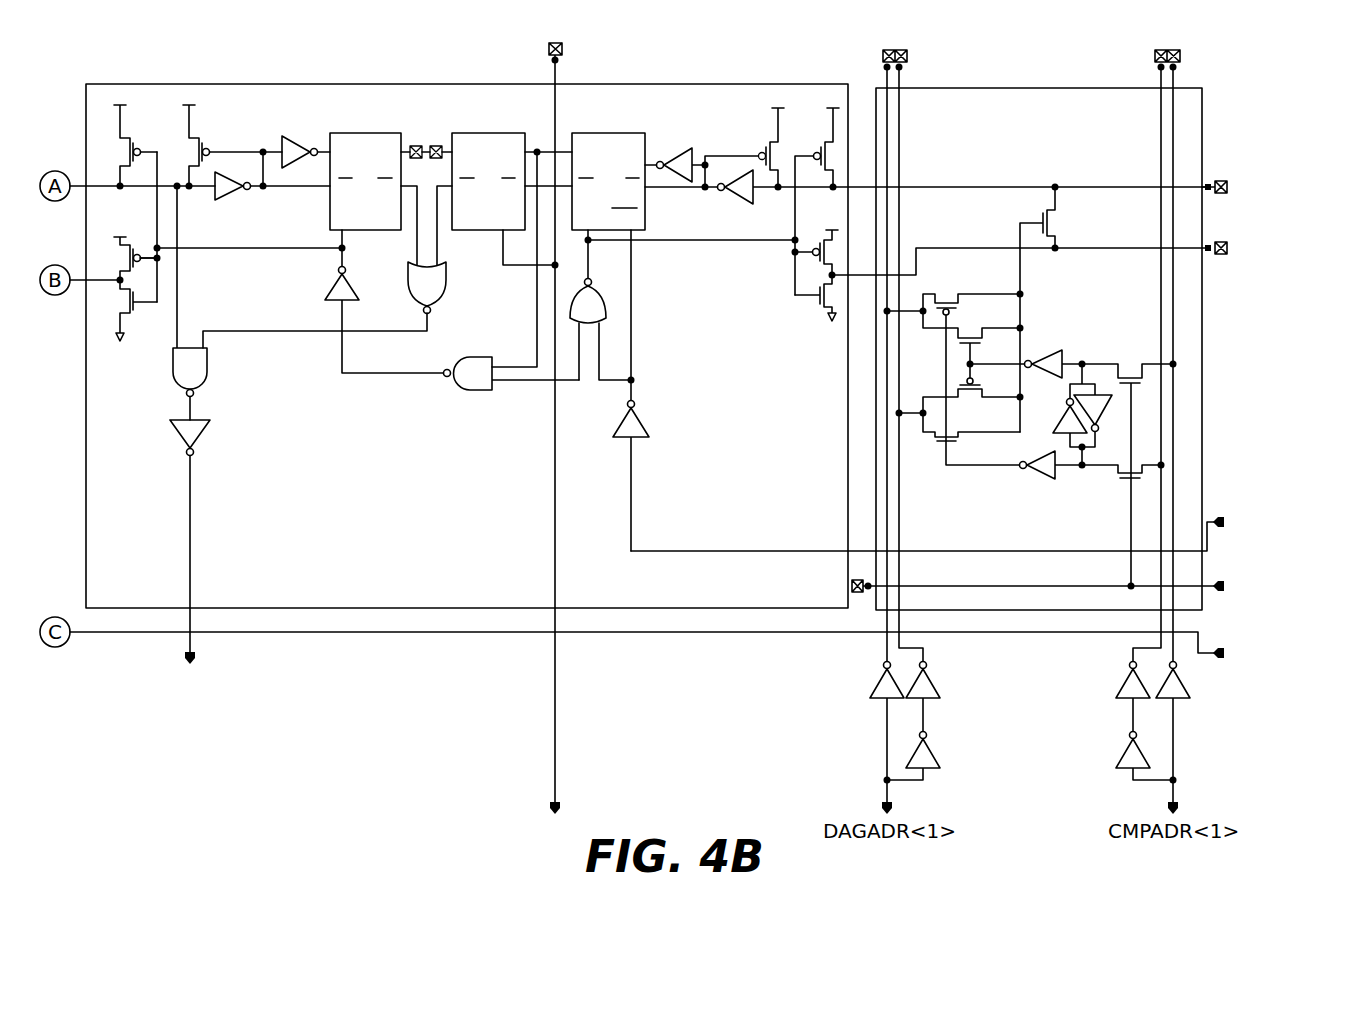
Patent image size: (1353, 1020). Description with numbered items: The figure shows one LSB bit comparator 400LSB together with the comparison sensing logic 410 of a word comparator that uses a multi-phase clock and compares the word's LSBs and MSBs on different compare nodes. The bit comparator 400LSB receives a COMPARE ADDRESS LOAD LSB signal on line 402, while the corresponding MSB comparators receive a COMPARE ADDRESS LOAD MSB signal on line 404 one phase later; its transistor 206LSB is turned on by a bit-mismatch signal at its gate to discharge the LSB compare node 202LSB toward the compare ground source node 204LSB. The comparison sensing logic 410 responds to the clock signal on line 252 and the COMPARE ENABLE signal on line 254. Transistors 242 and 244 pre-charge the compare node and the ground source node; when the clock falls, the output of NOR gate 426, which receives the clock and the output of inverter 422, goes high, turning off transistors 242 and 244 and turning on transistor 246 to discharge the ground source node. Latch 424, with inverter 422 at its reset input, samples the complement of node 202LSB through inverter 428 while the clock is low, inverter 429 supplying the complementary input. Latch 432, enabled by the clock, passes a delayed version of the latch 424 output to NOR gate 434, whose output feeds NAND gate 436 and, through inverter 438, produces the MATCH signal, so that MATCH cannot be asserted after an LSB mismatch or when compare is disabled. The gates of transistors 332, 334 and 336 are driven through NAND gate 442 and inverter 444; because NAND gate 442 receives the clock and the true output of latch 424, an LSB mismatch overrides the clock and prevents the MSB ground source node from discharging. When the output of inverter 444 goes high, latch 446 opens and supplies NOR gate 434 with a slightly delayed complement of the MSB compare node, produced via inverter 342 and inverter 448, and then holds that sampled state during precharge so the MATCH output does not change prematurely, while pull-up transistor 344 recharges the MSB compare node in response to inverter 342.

The transistor 332 is at (134, 146).
The pull-up transistor 344 is at (197, 151).
The transistor 334 is at (134, 246).
The transistor 336 is at (134, 318).
The inverter 342 is at (236, 197).
The inverter 448 is at (281, 145).
The latch 446 is at (367, 232).
The latch 432 is at (500, 132).
The latch 424 is at (587, 132).
The inverter 429 is at (676, 148).
The inverter 428 is at (733, 203).
The transistor 242 is at (824, 148).
The transistor 244 is at (822, 244).
The transistor 246 is at (822, 307).
The inverter 444 is at (326, 286).
The NOR gate 434 is at (446, 290).
The NOR gate 426 is at (607, 304).
The NAND gate 436 is at (207, 378).
The inverter 438 is at (210, 434).
The NAND gate 442 is at (470, 392).
The inverter 422 is at (651, 420).
The comparison sensing logic 410 is at (289, 606).
The line 252 is at (556, 698).
The line 254 is at (1060, 551).
The line 402 is at (1056, 586).
The line 404 is at (1078, 633).
The LSB bit comparator 400LSB is at (1204, 89).
The LSB compare node 202LSB is at (1054, 184).
The transistor 206LSB is at (1056, 232).
The compare ground source node 204LSB is at (1057, 251).